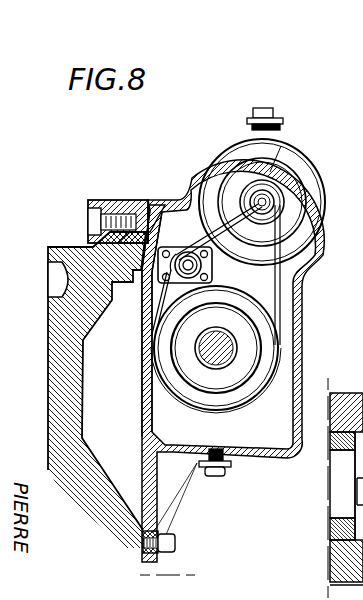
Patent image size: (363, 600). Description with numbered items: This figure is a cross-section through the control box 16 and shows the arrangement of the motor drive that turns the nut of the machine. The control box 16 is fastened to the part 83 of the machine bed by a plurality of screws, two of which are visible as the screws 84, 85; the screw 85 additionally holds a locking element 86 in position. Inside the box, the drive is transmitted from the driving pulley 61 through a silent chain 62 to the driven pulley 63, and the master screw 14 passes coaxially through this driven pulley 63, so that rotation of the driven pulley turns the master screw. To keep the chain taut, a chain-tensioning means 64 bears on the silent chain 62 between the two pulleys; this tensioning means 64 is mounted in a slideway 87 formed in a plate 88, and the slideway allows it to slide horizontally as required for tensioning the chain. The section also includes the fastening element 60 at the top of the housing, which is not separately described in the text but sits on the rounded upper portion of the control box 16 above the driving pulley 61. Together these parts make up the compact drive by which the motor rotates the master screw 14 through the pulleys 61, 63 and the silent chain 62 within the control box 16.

The master screw 14 is at (214, 362).
The control box 16 is at (300, 338).
The cover bolt 60 is at (283, 133).
The driving pulley 61 is at (258, 193).
The silent chain 62 is at (278, 293).
The driven pulley 63 is at (255, 393).
The chain-tensioning means 64 is at (177, 203).
The part of the bed 83 is at (50, 245).
The screw 84 is at (178, 543).
The screw 85 is at (90, 217).
The locking element 86 is at (106, 203).
The slideway 87 is at (212, 268).
The plate 88 is at (148, 200).